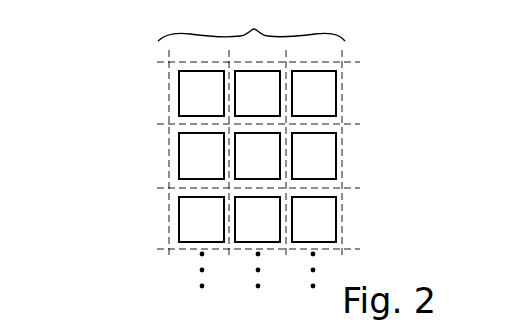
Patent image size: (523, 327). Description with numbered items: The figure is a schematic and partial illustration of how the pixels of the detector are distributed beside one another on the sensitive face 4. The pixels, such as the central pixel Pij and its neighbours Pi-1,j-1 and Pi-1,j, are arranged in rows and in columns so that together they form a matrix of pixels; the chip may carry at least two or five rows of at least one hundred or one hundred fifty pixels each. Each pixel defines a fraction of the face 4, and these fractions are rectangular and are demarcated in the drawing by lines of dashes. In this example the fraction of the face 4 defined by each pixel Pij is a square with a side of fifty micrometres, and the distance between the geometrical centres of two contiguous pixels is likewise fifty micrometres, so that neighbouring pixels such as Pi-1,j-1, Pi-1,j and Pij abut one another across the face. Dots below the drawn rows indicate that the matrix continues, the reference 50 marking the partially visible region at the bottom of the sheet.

The sensitive face 4 is at (251, 24).
The pixel matrix 50 is at (225, 323).
The pixel Pij is at (287, 132).
The pixel Pi-1,j-1 is at (170, 93).
The pixel Pi-1,j is at (170, 155).